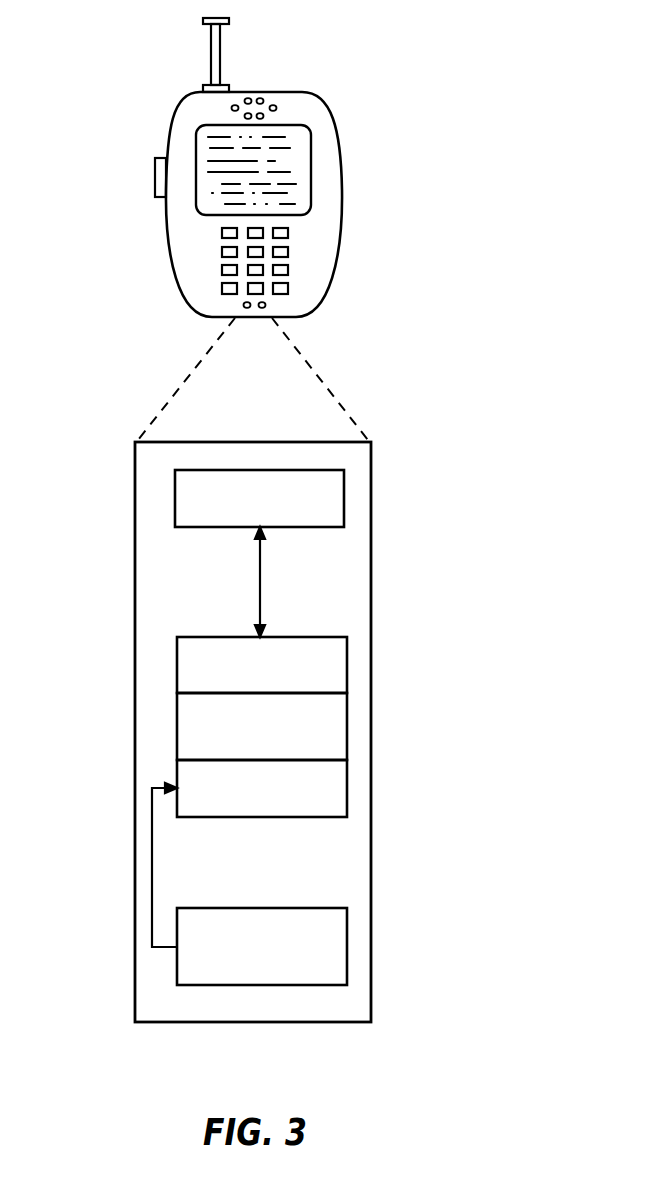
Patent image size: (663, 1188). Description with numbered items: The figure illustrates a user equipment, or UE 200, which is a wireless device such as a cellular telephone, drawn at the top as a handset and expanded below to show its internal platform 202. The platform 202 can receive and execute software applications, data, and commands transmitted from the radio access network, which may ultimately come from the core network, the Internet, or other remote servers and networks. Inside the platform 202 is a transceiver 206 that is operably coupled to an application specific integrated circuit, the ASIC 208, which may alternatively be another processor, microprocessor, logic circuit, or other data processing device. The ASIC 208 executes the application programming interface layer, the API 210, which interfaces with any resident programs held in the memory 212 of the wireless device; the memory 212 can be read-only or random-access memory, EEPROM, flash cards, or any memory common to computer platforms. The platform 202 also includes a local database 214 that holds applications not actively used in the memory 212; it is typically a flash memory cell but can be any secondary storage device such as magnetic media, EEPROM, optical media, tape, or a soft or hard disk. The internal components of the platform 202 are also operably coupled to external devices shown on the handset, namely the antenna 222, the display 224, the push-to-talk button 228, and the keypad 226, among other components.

The UE 200 is at (320, 295).
The platform 202 is at (135, 637).
The transceiver 206 is at (344, 498).
The application specific integrated circuit (ASIC) 208 is at (347, 672).
The application programming interface (API) 210 is at (347, 720).
The memory 212 is at (347, 787).
The local database 214 is at (347, 928).
The antenna 222 is at (222, 33).
The display 224 is at (312, 158).
The keypad 226 is at (288, 251).
The push-to-talk button 228 is at (155, 170).